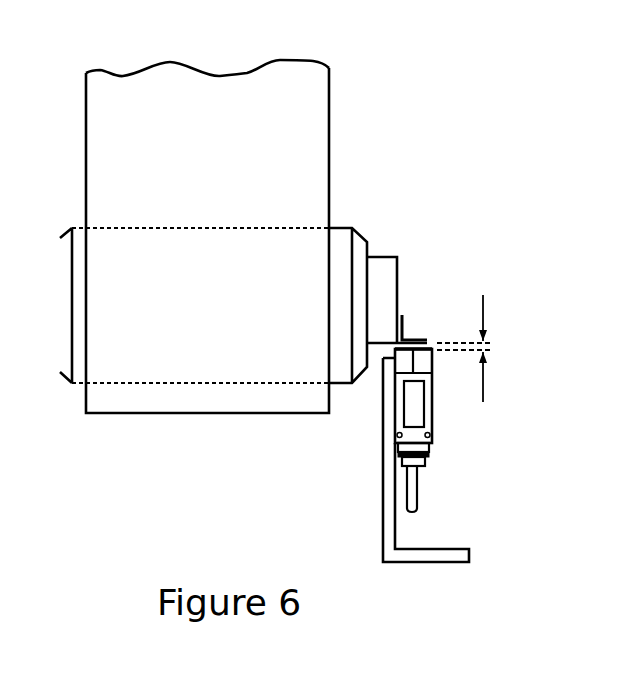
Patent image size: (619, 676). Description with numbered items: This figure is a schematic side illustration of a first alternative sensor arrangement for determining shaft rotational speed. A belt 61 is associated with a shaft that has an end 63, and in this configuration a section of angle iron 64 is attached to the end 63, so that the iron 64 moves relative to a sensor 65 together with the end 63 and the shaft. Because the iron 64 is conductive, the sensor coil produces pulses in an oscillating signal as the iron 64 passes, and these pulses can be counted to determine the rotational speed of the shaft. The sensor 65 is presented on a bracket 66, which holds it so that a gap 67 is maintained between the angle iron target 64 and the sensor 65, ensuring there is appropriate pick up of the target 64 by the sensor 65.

The belt 61 is at (334, 81).
The end 63 is at (368, 234).
The section of angle iron 64 is at (417, 337).
The sensor 65 is at (437, 437).
The bracket 66 is at (380, 484).
The gap 67 is at (489, 339).